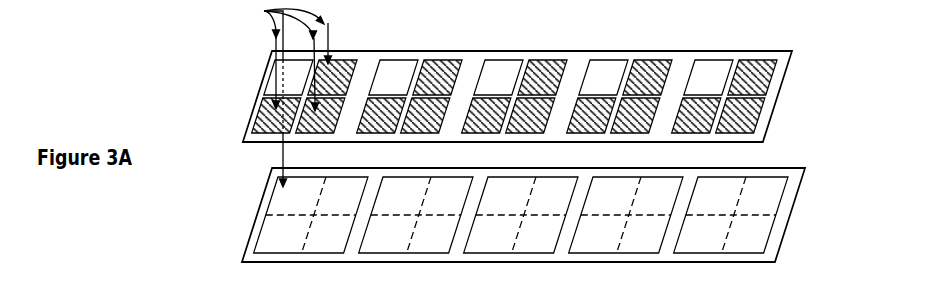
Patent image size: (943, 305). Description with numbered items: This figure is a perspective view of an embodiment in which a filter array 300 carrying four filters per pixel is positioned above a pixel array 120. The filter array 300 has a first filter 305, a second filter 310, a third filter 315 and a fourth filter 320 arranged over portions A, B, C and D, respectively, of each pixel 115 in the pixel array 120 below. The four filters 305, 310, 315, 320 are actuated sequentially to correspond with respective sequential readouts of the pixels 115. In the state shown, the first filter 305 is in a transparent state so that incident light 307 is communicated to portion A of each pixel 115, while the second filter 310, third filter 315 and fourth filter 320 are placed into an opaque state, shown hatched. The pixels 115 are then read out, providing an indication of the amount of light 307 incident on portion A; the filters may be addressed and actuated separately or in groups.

The filter array 300 is at (790, 103).
The first filter 305 is at (273, 52).
The second filter 310 is at (343, 60).
The third filter 315 is at (311, 134).
The fourth filter 320 is at (255, 104).
The incident light 307 is at (281, 94).
The pixel array 120 is at (803, 226).
The pixel 115 is at (318, 254).